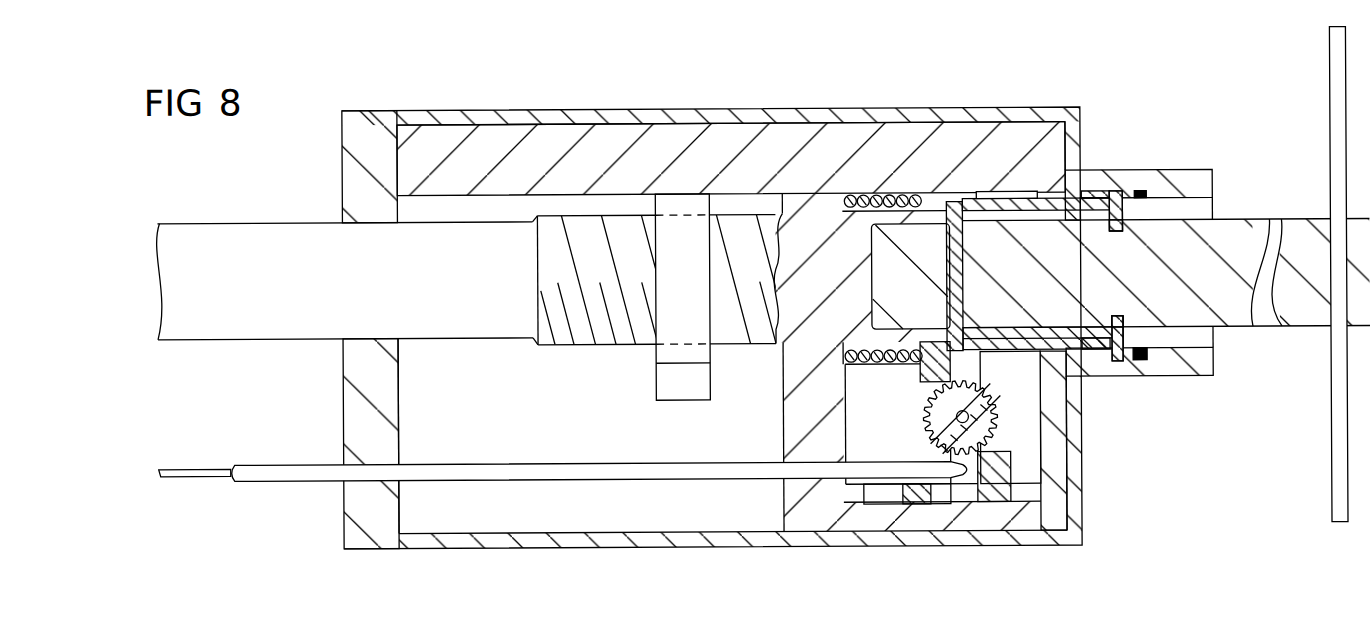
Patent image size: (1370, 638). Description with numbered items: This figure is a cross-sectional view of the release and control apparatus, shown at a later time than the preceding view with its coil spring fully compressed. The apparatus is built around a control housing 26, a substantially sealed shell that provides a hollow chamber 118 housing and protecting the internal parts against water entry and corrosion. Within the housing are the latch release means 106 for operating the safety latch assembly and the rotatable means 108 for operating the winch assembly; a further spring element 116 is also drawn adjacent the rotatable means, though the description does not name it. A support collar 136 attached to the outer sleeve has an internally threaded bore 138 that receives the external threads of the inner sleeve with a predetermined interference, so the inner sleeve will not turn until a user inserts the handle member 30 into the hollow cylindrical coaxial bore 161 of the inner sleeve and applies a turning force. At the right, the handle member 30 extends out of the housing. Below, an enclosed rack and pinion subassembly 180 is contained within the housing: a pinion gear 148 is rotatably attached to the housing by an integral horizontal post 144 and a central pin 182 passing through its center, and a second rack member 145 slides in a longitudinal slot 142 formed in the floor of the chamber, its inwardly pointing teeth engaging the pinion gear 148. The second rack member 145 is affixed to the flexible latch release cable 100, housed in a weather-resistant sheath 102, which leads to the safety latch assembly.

The control housing 26 is at (1116, 127).
The handle member 30 is at (1286, 196).
The flexible latch release cable 100 is at (190, 478).
The weather-resistant sheath 102 is at (296, 481).
The latch release means 106 is at (913, 372).
The rotatable means 108 is at (833, 193).
The lower coil spring 116 is at (847, 375).
The hollow chamber 118 is at (602, 438).
The support collar 136 is at (706, 298).
The internally threaded bore 138 is at (686, 344).
The longitudinal slot 142 is at (885, 502).
The horizontal post 144 is at (1023, 430).
The second rack member 145 is at (1013, 492).
The pinion gear 148 is at (988, 392).
The hollow cylindrical coaxial bore 161 is at (915, 232).
The rack and pinion subassembly 180 is at (1000, 517).
The central pin 182 is at (967, 400).